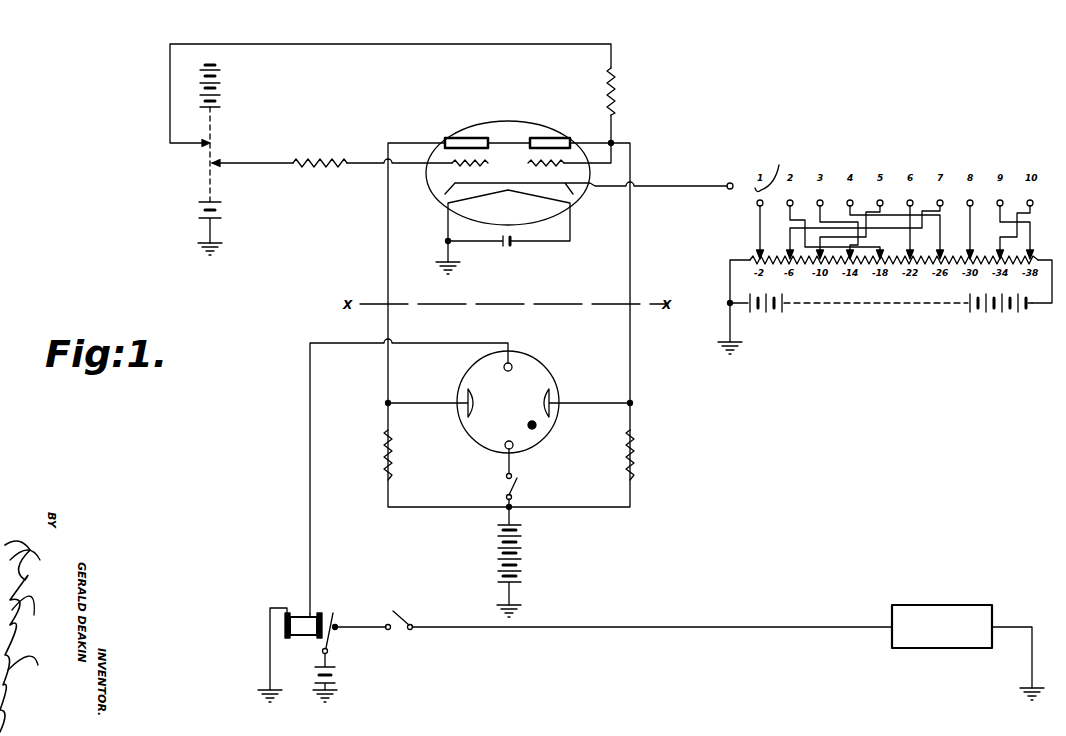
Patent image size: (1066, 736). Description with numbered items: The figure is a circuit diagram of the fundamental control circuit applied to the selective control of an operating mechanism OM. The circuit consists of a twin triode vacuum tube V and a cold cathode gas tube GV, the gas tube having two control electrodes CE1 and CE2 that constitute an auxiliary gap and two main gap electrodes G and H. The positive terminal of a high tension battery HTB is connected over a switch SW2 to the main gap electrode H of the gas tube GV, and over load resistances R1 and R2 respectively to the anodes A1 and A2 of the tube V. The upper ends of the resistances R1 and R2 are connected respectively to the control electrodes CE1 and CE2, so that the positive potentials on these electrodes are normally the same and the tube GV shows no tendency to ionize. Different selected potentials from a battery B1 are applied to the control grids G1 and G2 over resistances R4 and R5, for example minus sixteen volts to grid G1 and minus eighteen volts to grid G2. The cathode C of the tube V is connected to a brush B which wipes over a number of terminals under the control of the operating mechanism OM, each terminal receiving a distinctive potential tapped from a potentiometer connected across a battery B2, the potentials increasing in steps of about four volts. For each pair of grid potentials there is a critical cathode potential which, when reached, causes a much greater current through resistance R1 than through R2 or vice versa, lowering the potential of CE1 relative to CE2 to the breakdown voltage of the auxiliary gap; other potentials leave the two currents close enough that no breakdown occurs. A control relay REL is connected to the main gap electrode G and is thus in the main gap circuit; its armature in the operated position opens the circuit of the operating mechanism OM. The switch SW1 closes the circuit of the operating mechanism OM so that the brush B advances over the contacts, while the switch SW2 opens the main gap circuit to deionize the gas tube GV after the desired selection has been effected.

The battery B1 is at (207, 153).
The resistance R4 is at (320, 153).
The resistance R5 is at (614, 98).
The twin triode vacuum tube V is at (576, 186).
The anode A1 is at (466, 136).
The anode A2 is at (550, 136).
The control grid G1 is at (457, 166).
The control grid G2 is at (556, 166).
The cathode C is at (512, 185).
The brush B is at (756, 169).
The battery B2 is at (885, 305).
The cold cathode gas tube GV is at (509, 404).
The main gap electrode G is at (508, 376).
The control electrode CE1 is at (470, 400).
The control electrode CE2 is at (548, 400).
The main gap electrode H is at (505, 449).
The switch SW2 is at (530, 491).
The load resistance R1 is at (399, 455).
The load resistance R2 is at (615, 455).
The high tension battery HTB is at (531, 562).
The switch SW1 is at (613, 618).
The control relay REL is at (298, 655).
The operating mechanism OM is at (968, 639).